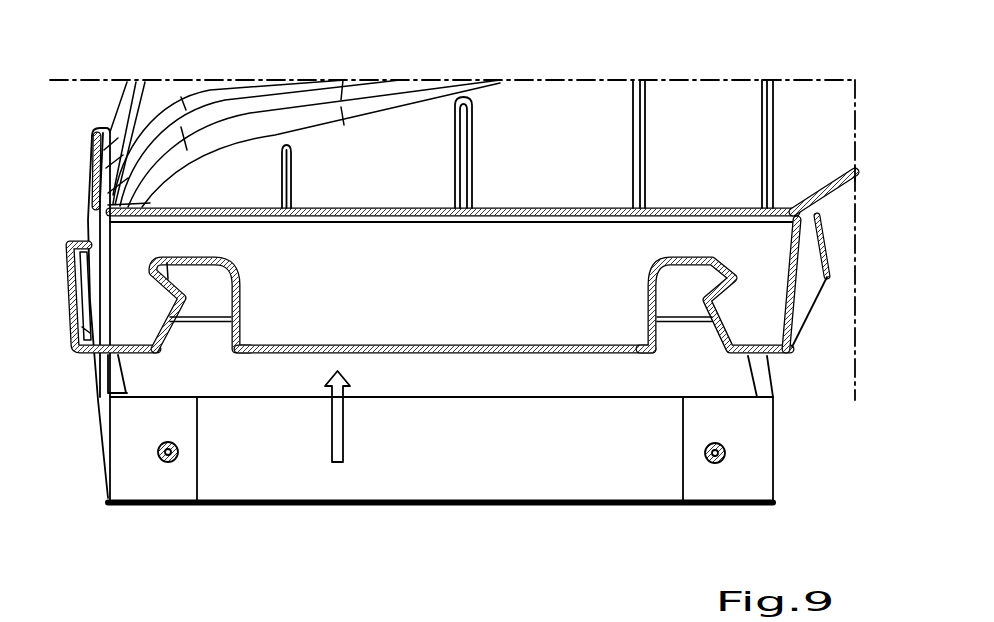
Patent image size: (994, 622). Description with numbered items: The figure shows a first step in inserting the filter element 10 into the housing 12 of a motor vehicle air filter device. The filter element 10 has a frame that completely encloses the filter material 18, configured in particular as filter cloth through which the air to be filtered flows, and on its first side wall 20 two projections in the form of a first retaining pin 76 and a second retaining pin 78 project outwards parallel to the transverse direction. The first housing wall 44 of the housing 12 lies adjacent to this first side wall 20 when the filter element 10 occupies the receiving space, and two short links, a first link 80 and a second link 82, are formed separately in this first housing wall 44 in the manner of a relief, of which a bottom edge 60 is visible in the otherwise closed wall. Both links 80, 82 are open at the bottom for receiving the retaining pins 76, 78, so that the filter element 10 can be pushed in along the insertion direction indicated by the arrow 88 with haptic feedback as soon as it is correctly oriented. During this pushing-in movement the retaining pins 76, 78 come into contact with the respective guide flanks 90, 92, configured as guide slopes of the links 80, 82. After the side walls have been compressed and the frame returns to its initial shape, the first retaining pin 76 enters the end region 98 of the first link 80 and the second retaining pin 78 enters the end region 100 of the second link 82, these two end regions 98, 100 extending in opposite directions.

The filter element 10 is at (793, 398).
The housing 12 is at (96, 105).
The filter material 18 is at (458, 377).
The first side wall 20 is at (261, 478).
The first housing wall 44 is at (513, 257).
The bottom edge 60 is at (446, 347).
The first retaining pin 76 is at (712, 463).
The second retaining pin 78 is at (167, 462).
The first link 80 is at (678, 290).
The second link 82 is at (208, 282).
The arrow 88 is at (335, 462).
The guide flank 90 is at (767, 331).
The guide flank 92 is at (167, 315).
The end region 98 is at (737, 275).
The end region 100 is at (168, 278).